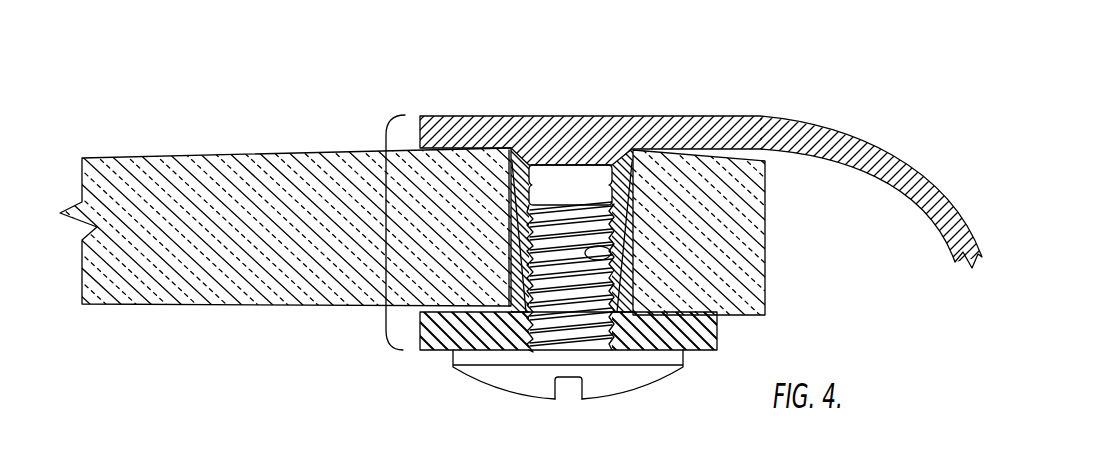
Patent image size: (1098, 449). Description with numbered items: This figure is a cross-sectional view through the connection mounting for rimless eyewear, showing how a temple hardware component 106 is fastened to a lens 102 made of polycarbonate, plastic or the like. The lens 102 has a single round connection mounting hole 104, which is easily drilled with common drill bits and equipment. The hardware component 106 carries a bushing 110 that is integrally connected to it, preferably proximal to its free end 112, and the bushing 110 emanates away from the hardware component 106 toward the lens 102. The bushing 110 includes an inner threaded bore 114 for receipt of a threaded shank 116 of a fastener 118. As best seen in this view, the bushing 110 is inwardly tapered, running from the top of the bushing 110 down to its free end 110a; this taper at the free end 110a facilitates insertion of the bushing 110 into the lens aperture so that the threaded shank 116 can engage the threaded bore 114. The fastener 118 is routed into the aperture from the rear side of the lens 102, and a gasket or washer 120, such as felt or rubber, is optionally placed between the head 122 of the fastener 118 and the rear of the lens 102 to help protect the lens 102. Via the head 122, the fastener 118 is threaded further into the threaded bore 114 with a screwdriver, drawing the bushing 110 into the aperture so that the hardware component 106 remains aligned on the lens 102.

The lens 102 is at (287, 448).
The connection mounting hole 104 is at (615, 270).
The hardware component 106 is at (386, 232).
The bushing 110 is at (630, 172).
The free end of the bushing 110a is at (512, 300).
The free end of the hardware component 112 is at (490, 117).
The threaded bore 114 is at (585, 248).
The threaded shank 116 is at (520, 257).
The fastener 118 is at (664, 381).
The washer 120 is at (717, 342).
The head 122 is at (603, 397).